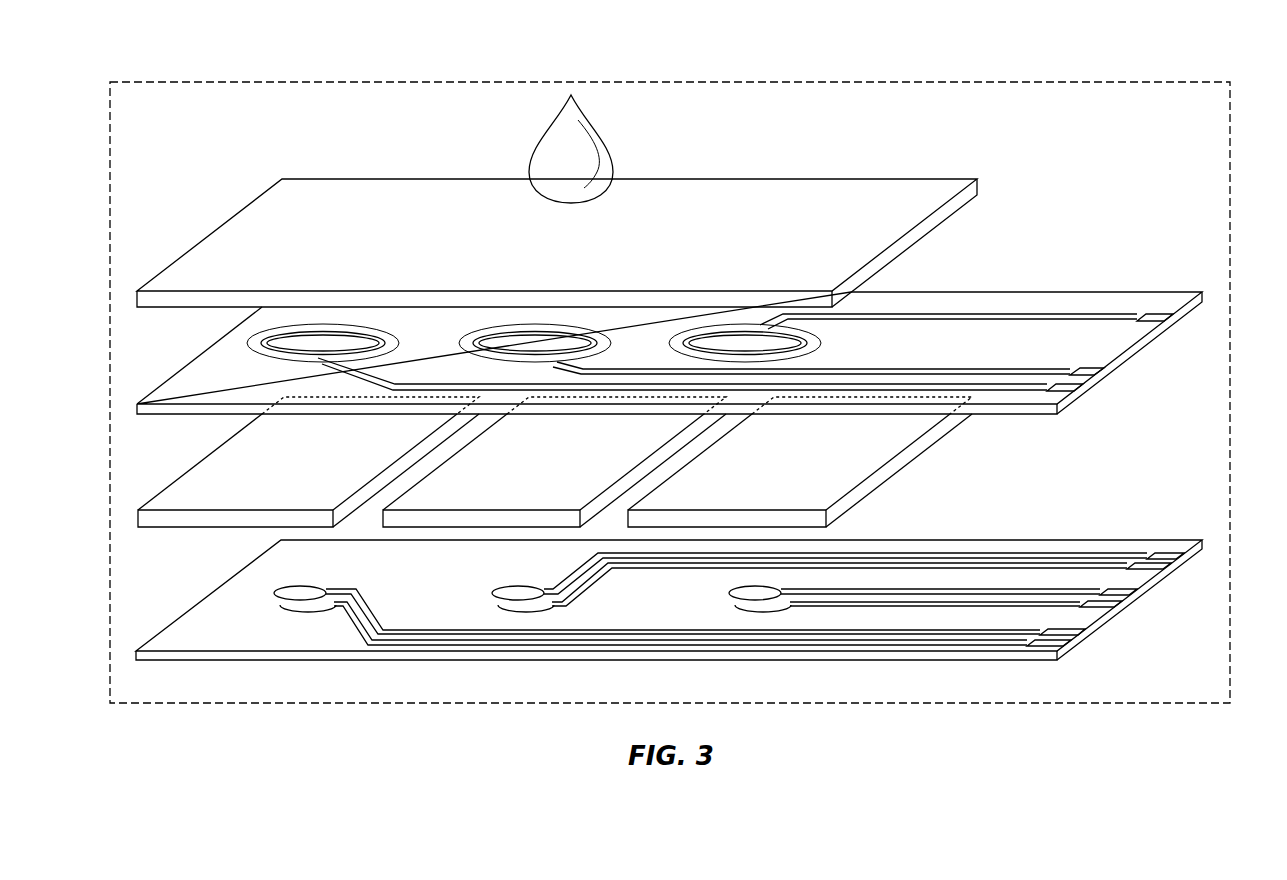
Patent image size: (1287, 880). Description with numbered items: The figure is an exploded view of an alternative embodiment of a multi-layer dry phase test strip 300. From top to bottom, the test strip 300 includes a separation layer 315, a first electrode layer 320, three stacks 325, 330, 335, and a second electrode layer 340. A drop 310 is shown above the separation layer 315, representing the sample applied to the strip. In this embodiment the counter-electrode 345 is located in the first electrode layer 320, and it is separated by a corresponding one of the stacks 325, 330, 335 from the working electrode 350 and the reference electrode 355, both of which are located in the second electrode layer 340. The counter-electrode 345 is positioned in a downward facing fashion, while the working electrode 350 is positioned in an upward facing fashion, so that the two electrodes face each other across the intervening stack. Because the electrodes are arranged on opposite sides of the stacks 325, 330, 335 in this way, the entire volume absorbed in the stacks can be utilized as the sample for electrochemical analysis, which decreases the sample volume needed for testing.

The test strip 300 is at (200, 82).
The fluid sample drop 310 is at (538, 149).
The separation layer 315 is at (310, 196).
The first electrode layer 320 is at (432, 338).
The stack 325 is at (193, 490).
The stack 330 is at (535, 482).
The stack 335 is at (888, 468).
The second electrode layer 340 is at (197, 627).
The counter-electrode 345 is at (256, 352).
The working electrode 350 is at (301, 592).
The reference electrode 355 is at (318, 612).